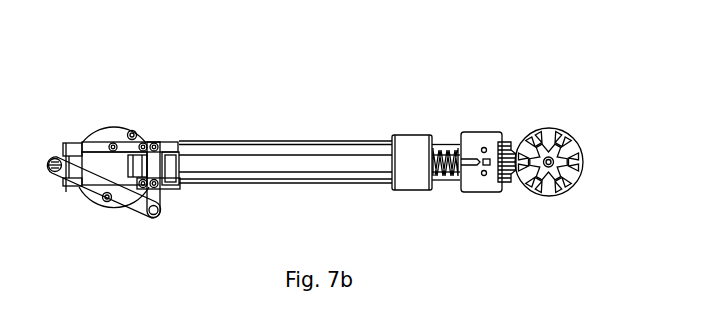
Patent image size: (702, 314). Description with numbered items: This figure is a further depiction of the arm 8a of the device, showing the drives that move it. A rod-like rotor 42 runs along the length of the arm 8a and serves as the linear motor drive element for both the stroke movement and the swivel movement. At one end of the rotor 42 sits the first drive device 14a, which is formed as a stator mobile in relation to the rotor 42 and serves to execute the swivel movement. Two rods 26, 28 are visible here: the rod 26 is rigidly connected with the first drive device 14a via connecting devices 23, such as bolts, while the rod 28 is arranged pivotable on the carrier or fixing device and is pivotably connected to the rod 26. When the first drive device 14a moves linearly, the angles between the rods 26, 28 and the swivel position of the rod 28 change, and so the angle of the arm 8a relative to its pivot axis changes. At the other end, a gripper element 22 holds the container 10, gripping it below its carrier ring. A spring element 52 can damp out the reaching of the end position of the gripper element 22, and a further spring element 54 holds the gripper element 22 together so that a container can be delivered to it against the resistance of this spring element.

The arm 8a is at (307, 116).
The container 10 is at (573, 137).
The first drive device 14a is at (93, 147).
The gripper element 22 is at (515, 188).
The connecting devices 23 is at (153, 148).
The rod 26 is at (153, 172).
The rod 28 is at (123, 193).
The rotor 42 is at (298, 163).
The spring element 52 is at (442, 170).
The further spring element 54 is at (505, 158).